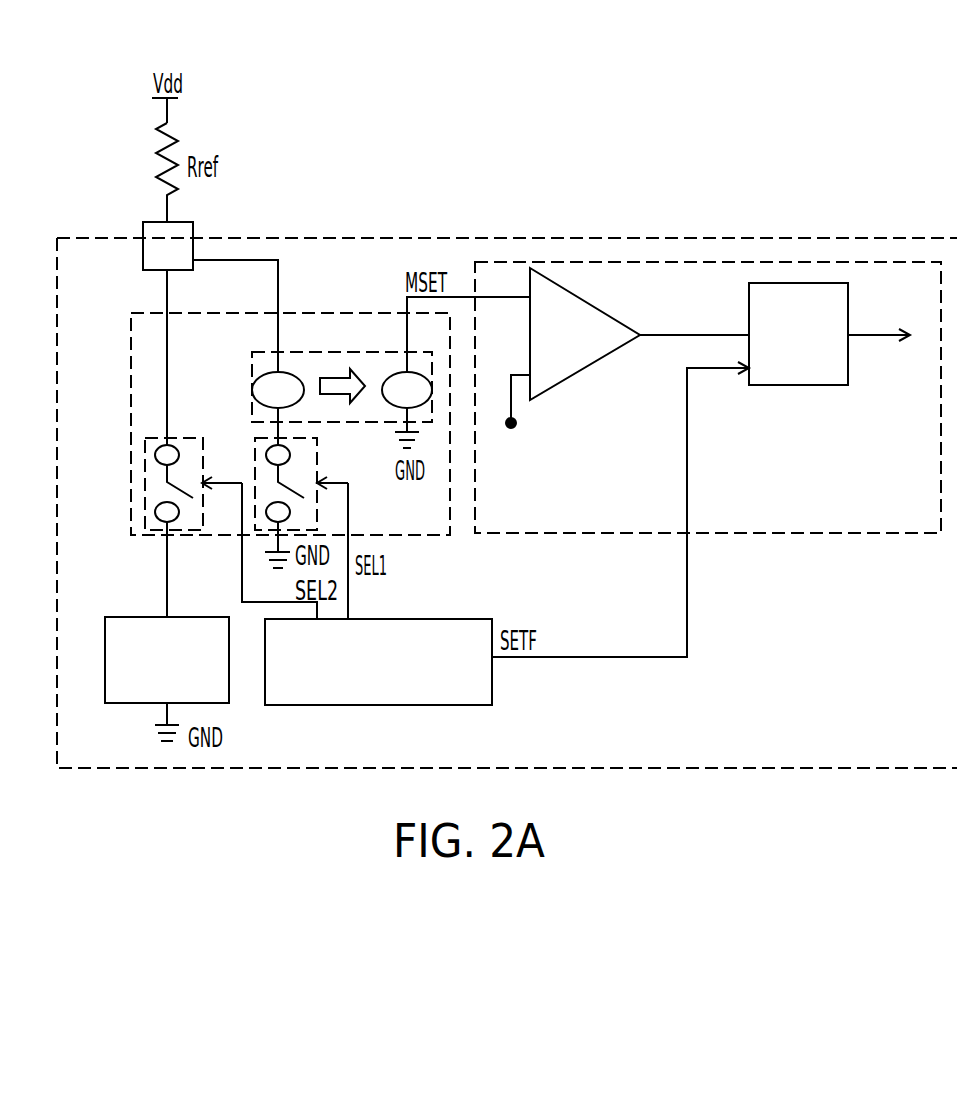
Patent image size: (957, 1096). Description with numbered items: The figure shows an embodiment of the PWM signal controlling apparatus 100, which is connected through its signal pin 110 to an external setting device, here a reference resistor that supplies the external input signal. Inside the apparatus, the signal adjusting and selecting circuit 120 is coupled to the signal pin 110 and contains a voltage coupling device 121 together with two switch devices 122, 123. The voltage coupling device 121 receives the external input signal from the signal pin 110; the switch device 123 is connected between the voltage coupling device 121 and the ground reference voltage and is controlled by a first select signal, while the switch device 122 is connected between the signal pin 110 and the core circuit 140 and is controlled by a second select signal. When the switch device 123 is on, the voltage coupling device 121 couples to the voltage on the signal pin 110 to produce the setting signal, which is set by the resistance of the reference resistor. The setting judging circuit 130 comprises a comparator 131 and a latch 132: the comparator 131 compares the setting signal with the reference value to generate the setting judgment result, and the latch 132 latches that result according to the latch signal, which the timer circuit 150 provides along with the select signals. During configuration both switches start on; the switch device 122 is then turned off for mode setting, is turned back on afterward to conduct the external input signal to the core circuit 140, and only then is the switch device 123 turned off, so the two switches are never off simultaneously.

The PWM signal controlling apparatus 100 is at (495, 768).
The signal pin 110 is at (194, 238).
The signal adjusting and selecting circuit 120 is at (330, 312).
The voltage coupling device 121 is at (252, 368).
The switch device 122 is at (178, 438).
The switch device 123 is at (317, 447).
The setting judging circuit 130 is at (708, 425).
The comparator 131 is at (573, 382).
The latch 132 is at (797, 385).
The core circuit 140 is at (188, 617).
The timer circuit 150 is at (449, 619).